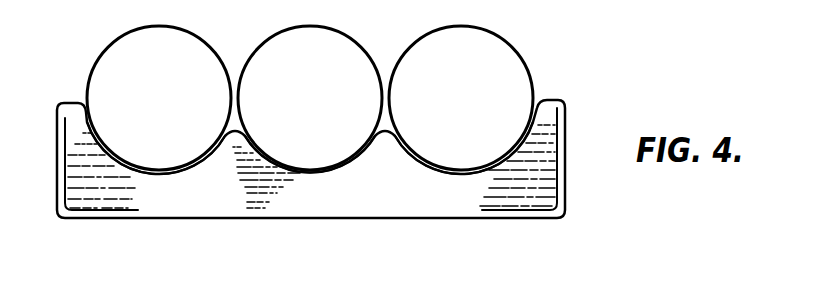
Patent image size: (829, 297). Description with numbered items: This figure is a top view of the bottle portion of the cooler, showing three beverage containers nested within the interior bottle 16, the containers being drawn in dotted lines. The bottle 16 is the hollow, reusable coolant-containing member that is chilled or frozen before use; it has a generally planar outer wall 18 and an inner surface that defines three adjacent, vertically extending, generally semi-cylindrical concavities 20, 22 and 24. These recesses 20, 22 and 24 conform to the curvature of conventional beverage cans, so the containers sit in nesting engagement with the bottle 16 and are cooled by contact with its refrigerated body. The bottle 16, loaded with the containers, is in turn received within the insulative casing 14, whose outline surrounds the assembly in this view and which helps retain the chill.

The insulative casing 14 is at (530, 219).
The interior bottle 16 is at (583, 82).
The outer wall 18 is at (153, 205).
The semi-cylindrical concavity 20 is at (170, 160).
The semi-cylindrical concavity 22 is at (314, 162).
The semi-cylindrical concavity 24 is at (470, 160).